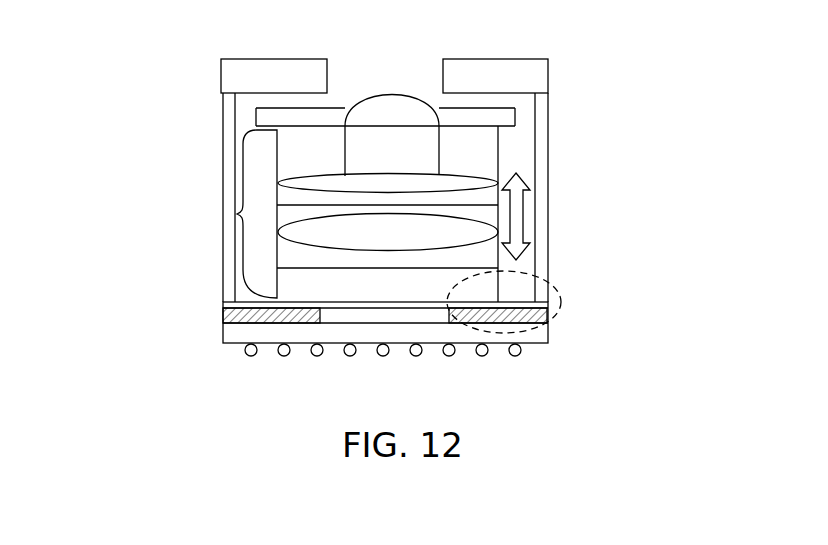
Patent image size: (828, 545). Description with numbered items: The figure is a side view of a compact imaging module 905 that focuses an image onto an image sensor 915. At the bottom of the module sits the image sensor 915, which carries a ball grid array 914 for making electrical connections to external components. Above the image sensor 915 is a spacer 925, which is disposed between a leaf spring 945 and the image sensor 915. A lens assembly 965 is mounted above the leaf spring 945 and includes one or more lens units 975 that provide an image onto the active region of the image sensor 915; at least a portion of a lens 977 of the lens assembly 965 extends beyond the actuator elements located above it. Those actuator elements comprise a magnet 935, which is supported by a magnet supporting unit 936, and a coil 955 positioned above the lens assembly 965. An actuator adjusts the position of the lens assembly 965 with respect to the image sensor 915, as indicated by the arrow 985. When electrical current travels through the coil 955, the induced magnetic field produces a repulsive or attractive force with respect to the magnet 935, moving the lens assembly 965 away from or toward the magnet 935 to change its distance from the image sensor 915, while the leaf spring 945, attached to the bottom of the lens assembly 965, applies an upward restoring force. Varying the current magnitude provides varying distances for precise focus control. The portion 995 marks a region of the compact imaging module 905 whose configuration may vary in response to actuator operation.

The compact imaging module 905 is at (84, 29).
The ball grid array 914 is at (282, 355).
The image sensor 915 is at (222, 335).
The spacer 925 is at (222, 313).
The magnet 935 is at (228, 75).
The magnet supporting unit 936 is at (222, 170).
The leaf spring 945 is at (222, 300).
The coil 955 is at (258, 117).
The lens assembly 965 is at (237, 214).
The lens units 975 is at (452, 172).
The lens 977 is at (400, 95).
The arrow 985 is at (515, 212).
The portion 995 is at (560, 295).